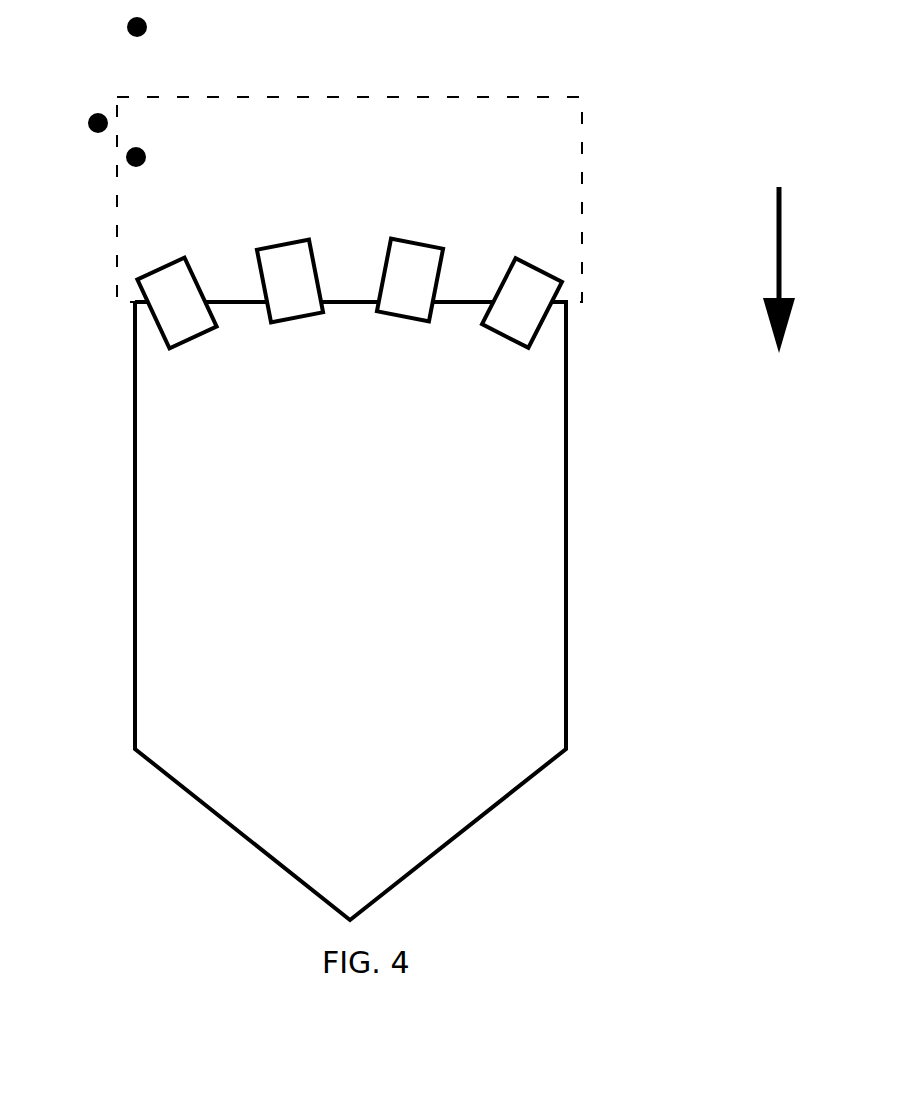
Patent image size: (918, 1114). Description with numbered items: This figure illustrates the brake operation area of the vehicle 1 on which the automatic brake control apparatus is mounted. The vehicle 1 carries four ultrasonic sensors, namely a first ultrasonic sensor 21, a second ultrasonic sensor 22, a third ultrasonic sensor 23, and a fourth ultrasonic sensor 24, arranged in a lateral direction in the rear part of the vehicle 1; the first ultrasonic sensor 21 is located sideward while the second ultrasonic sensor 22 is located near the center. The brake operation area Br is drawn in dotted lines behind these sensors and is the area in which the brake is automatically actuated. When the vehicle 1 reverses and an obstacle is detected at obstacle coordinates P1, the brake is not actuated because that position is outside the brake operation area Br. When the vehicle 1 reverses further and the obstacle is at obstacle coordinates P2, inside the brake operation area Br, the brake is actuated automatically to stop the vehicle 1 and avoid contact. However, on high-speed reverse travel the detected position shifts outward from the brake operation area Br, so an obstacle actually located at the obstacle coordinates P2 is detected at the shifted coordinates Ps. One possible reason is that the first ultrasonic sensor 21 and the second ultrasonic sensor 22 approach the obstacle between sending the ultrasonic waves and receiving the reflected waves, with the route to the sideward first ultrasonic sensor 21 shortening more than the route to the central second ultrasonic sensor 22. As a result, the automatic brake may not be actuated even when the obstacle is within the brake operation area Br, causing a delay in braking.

The vehicle 1 is at (113, 564).
The first ultrasonic sensor 21 is at (176, 303).
The second ultrasonic sensor 22 is at (290, 281).
The third ultrasonic sensor 23 is at (410, 280).
The fourth ultrasonic sensor 24 is at (522, 303).
The brake operation area Br is at (349, 199).
The obstacle coordinates P1 is at (155, 28).
The obstacle coordinates P2 is at (154, 158).
The shifted coordinates Ps is at (79, 124).